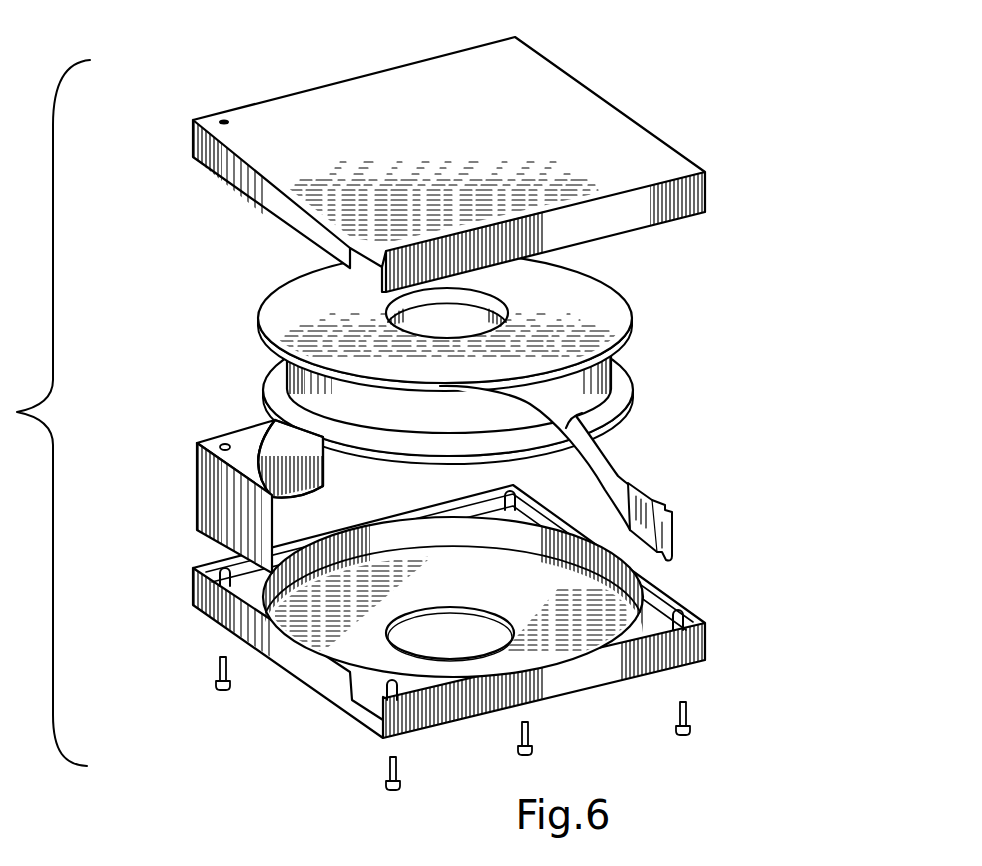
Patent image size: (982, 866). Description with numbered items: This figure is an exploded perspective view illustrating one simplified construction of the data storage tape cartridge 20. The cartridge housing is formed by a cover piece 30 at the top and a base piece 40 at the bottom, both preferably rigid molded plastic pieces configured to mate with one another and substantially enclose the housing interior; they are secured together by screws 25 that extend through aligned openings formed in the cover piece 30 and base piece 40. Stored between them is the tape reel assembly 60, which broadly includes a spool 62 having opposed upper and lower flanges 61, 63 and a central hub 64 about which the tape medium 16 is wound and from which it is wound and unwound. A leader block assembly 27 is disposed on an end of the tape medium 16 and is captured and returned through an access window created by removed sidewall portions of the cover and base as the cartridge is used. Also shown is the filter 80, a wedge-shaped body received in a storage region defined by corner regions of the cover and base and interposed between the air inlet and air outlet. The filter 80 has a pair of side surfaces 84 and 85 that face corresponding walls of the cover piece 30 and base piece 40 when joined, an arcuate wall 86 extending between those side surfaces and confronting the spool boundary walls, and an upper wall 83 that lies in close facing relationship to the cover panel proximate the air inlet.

The data storage tape cartridge 20 is at (437, 419).
The cover piece 30 is at (578, 116).
The tape reel assembly 60 is at (417, 357).
The upper flange 61 is at (290, 292).
The spool 62 is at (588, 309).
The lower flange 63 is at (600, 422).
The central hub 64 is at (487, 294).
The tape medium 16 is at (605, 407).
The leader block assembly 27 is at (661, 511).
The filter 80 is at (241, 486).
The upper wall 83 is at (247, 440).
The side surface 84 is at (205, 537).
The side surface 85 is at (197, 447).
The arcuate wall 86 is at (320, 486).
The base piece 40 is at (668, 668).
The screws 25 is at (214, 684).